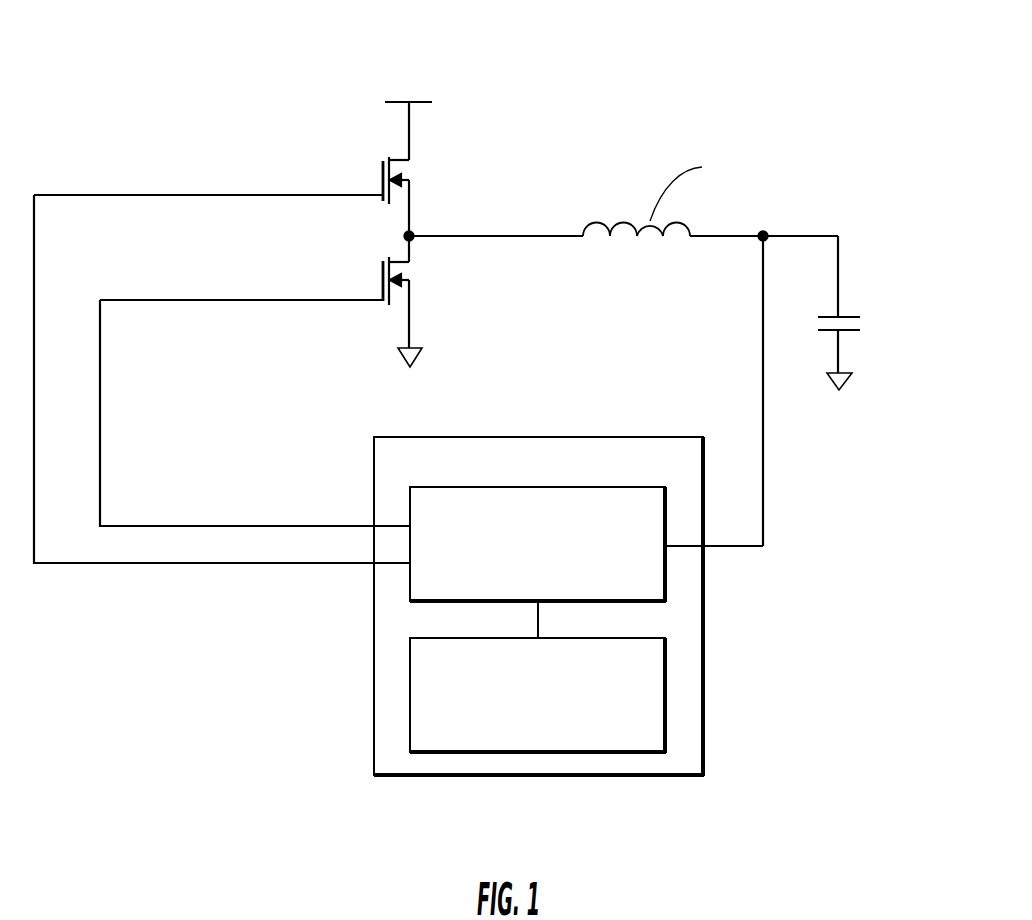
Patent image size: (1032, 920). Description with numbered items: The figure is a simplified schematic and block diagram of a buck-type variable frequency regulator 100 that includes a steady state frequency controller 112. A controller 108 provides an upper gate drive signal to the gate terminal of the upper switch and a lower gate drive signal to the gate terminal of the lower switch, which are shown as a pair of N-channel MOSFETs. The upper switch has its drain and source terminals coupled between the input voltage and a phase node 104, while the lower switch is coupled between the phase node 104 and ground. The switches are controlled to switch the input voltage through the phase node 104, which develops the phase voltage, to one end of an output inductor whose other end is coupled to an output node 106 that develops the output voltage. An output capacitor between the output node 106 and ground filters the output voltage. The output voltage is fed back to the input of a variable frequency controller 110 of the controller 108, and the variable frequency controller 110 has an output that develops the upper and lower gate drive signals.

The buck-type variable frequency regulator 100 is at (762, 76).
The phase node 104 is at (412, 234).
The output node 106 is at (764, 233).
The controller 108 is at (539, 437).
The variable frequency controller 110 is at (666, 576).
The steady state frequency controller 112 is at (666, 683).